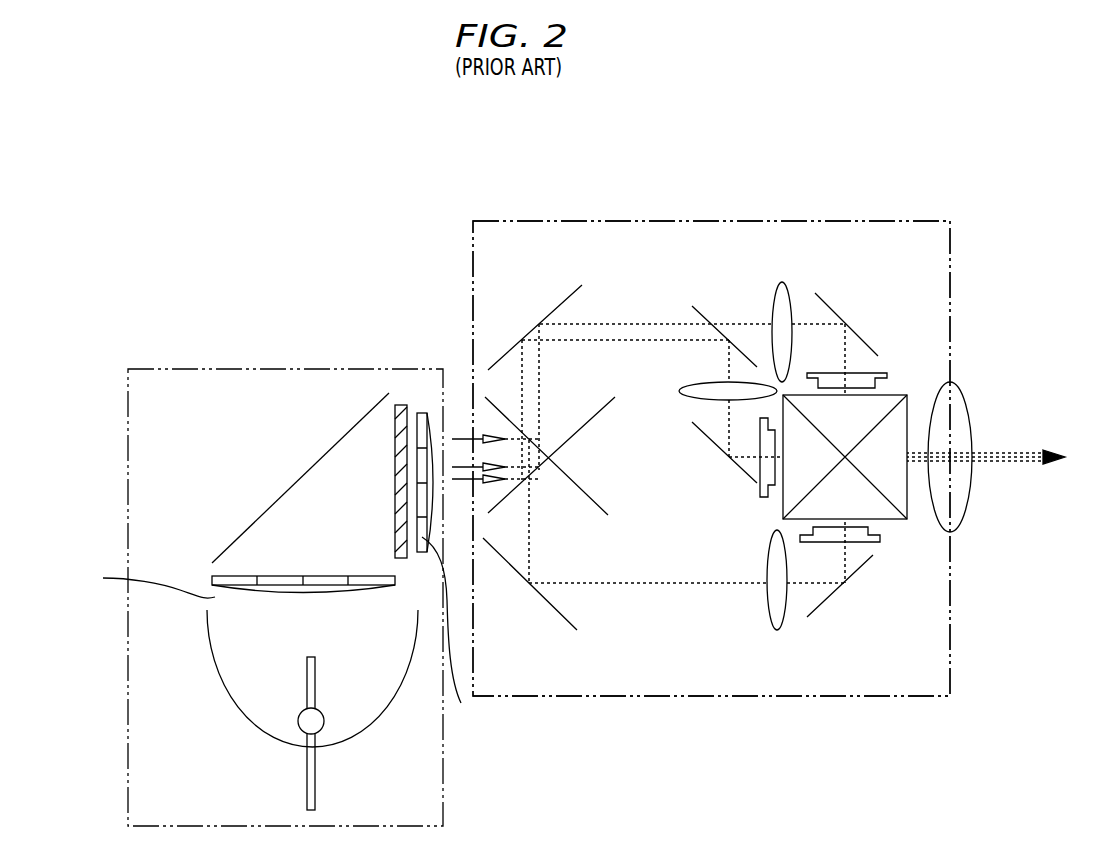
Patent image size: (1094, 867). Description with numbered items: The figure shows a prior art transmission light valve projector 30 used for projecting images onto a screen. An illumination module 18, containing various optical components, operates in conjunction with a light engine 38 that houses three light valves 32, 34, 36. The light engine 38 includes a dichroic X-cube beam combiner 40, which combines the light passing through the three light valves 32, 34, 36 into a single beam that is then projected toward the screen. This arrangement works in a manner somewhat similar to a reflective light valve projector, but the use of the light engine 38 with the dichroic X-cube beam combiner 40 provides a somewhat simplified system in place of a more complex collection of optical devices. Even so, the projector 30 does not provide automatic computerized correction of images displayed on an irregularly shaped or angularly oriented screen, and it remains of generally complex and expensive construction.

The illumination module 18 is at (172, 369).
The transmission light valve projector 30 is at (854, 207).
The light valve 32 is at (863, 370).
The light valve 34 is at (758, 493).
The light valve 36 is at (857, 543).
The light engine 38 is at (763, 422).
The dichroic X-cube beam combiner 40 is at (897, 523).